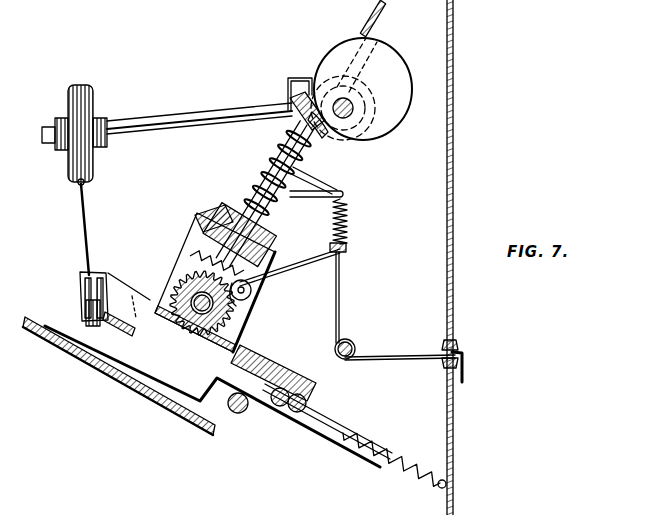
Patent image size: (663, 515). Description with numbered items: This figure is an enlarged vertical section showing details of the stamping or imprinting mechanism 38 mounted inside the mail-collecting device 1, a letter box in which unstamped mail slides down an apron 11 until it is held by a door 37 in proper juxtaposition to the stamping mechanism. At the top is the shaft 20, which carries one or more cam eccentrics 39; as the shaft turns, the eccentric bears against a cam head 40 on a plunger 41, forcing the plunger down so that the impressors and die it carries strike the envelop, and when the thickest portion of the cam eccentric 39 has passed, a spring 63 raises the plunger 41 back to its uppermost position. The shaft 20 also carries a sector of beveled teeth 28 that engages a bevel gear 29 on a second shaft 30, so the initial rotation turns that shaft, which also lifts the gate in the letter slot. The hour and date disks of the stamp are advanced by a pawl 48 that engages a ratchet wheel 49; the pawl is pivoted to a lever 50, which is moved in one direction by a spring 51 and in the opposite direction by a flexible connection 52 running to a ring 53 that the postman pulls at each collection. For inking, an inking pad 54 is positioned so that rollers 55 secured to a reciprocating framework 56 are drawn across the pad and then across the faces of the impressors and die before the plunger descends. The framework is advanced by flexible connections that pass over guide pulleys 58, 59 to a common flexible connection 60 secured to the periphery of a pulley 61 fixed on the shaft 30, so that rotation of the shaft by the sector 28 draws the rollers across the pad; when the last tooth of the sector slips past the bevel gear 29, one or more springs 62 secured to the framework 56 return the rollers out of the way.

The mail-collecting device 1 is at (452, 256).
The apron 11 is at (104, 364).
The shaft 20 is at (352, 100).
The sector of beveled teeth 28 is at (326, 130).
The bevel gear 29 is at (305, 84).
The shaft 30 is at (190, 130).
The door 37 is at (228, 416).
The stamping or imprinting mechanism 38 is at (232, 335).
The cam eccentric 39 is at (400, 84).
The cam head 40 is at (292, 103).
The plunger 41 is at (293, 145).
The pawl 48 is at (251, 292).
The ratchet wheel 49 is at (252, 320).
The lever 50 is at (346, 250).
The spring 51 is at (346, 234).
The flexible connection 52 is at (340, 320).
The ring 53 is at (466, 376).
The inking pad 54 is at (314, 388).
The rollers 55 is at (308, 406).
The framework 56 is at (318, 420).
The guide pulley 58 is at (105, 328).
The guide pulley 59 is at (84, 300).
The common flexible connection 60 is at (95, 247).
The pulley 61 is at (84, 112).
The spring 62 is at (410, 474).
The spring 63 is at (278, 152).